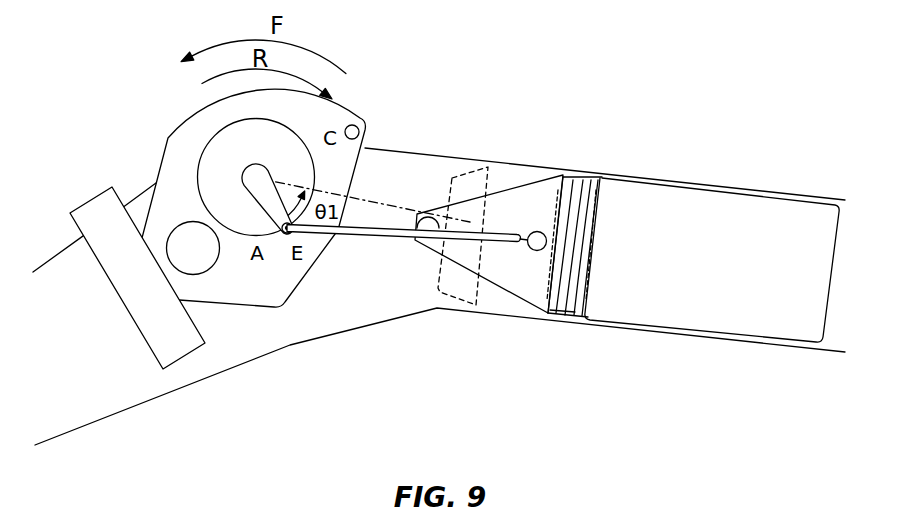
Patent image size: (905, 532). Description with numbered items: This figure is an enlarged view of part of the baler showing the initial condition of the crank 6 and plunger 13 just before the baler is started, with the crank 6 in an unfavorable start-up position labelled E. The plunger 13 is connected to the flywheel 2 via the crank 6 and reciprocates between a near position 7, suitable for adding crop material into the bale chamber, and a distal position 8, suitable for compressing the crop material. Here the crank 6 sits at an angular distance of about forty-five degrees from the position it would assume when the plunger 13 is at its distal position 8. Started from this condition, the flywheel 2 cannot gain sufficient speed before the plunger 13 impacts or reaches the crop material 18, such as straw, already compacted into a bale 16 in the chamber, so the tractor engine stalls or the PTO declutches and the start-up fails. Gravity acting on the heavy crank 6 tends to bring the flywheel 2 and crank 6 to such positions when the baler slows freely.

The flywheel 2 is at (97, 203).
The crank 6 is at (245, 172).
The near position 7 is at (455, 300).
The distal position 8 is at (567, 327).
The plunger 13 is at (512, 187).
The bale 16 is at (708, 218).
The crop material 18 is at (587, 183).